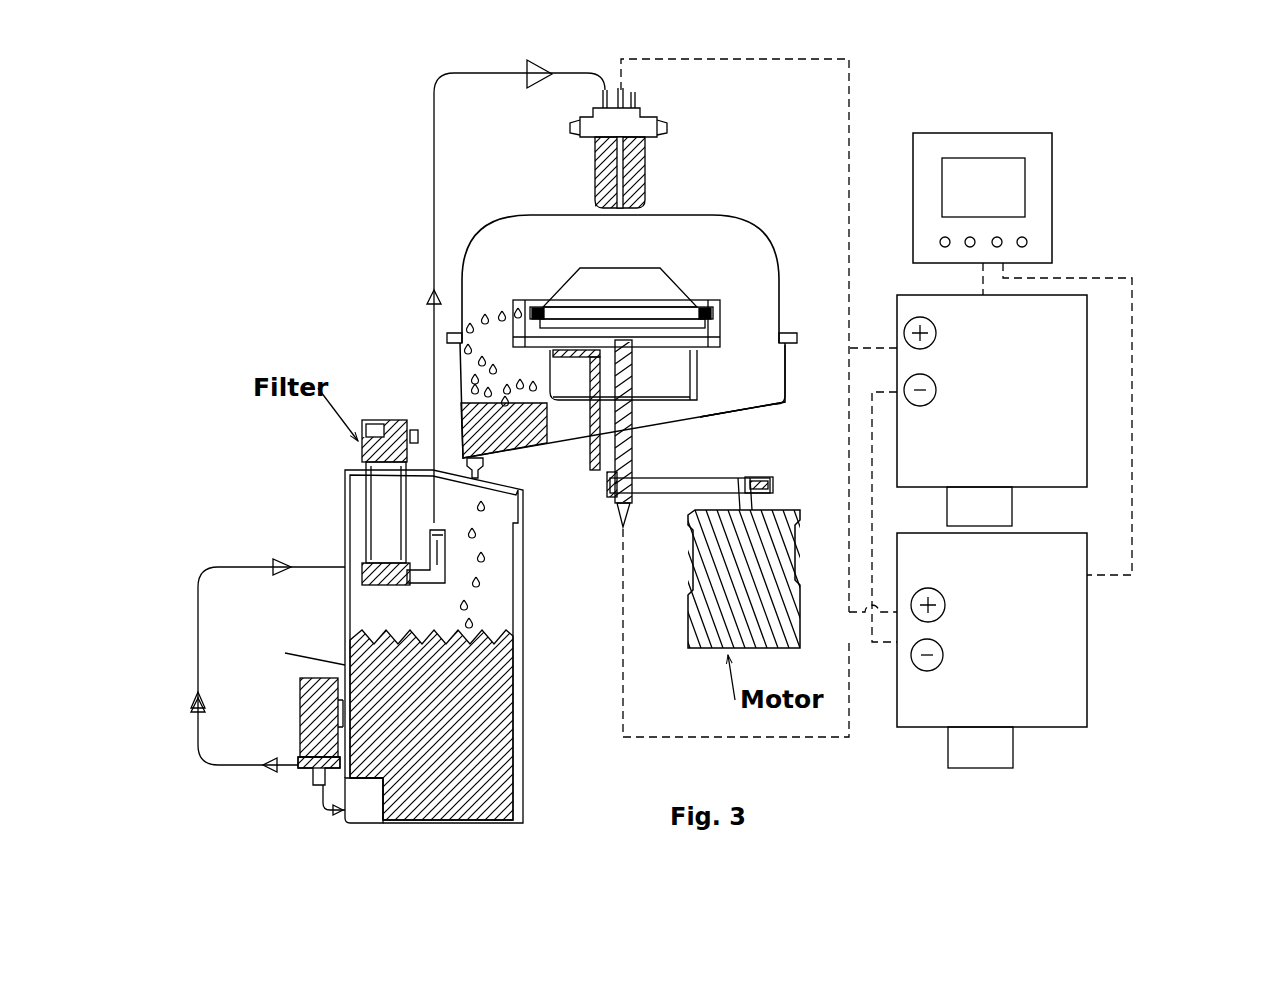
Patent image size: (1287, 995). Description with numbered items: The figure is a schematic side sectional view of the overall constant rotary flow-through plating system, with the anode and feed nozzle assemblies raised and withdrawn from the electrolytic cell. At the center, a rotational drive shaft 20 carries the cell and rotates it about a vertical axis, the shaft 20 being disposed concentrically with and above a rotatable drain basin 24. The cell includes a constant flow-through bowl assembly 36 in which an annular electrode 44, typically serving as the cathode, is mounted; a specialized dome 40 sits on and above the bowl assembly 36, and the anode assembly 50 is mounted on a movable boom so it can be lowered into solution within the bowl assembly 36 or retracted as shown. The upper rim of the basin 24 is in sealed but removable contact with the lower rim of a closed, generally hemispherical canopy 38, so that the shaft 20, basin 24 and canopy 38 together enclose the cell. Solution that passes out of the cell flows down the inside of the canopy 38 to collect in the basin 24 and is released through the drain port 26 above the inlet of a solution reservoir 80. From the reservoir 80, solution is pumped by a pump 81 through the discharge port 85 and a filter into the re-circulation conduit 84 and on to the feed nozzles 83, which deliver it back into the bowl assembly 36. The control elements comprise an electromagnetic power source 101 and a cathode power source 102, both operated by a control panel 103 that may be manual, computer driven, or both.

The rotational drive shaft 20 is at (636, 450).
The drain basin 24 is at (458, 388).
The drain port 26 is at (490, 466).
The bowl assembly 36 is at (793, 374).
The canopy 38 is at (753, 223).
The dome 40 is at (675, 271).
The annular electrode 44 is at (716, 306).
The anode assembly 50 is at (594, 163).
The solution reservoir 80 is at (457, 790).
The pump 81 is at (302, 726).
The feed nozzles 83 is at (605, 87).
The re-circulation conduit 84 is at (221, 563).
The discharge port 85 is at (326, 813).
The electromagnetic power source 101 is at (1090, 405).
The cathode power source 102 is at (1090, 632).
The control panel 103 is at (1057, 212).